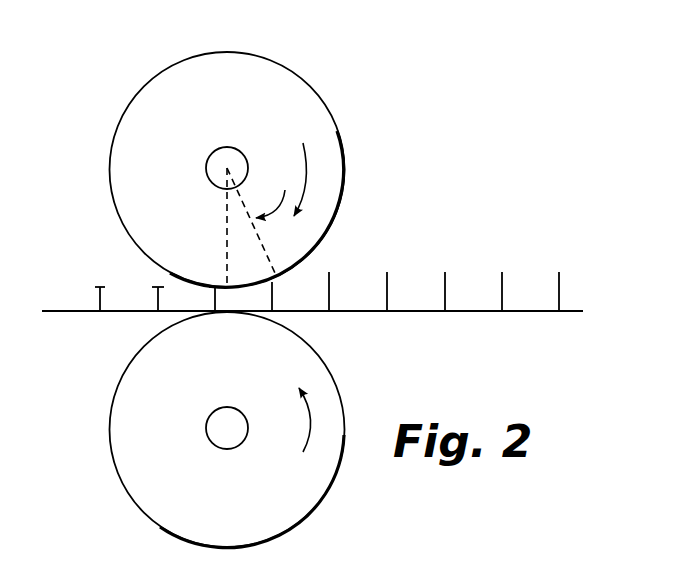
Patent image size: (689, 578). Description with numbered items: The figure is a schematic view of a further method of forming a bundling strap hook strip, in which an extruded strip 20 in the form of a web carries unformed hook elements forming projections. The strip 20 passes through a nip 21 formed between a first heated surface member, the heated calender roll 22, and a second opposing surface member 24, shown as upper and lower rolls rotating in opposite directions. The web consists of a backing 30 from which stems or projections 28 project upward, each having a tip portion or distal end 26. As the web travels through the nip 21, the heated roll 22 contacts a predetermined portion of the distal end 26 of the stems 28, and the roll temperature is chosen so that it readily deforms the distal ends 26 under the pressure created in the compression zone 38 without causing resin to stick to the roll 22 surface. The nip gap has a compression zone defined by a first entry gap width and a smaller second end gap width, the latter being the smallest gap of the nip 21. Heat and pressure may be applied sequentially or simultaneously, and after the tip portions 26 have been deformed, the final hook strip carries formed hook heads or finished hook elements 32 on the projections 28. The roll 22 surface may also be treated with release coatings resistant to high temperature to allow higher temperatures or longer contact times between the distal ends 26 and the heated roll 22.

The extruded strip 20 is at (476, 315).
The nip 21 is at (330, 255).
The heated calender roll 22 is at (124, 110).
The second opposing surface member 24 is at (127, 368).
The tip portion 26 is at (502, 278).
The projection 28 is at (329, 292).
The backing 30 is at (575, 310).
The finished hook elements 32 is at (158, 287).
The compression zone 38 is at (219, 230).